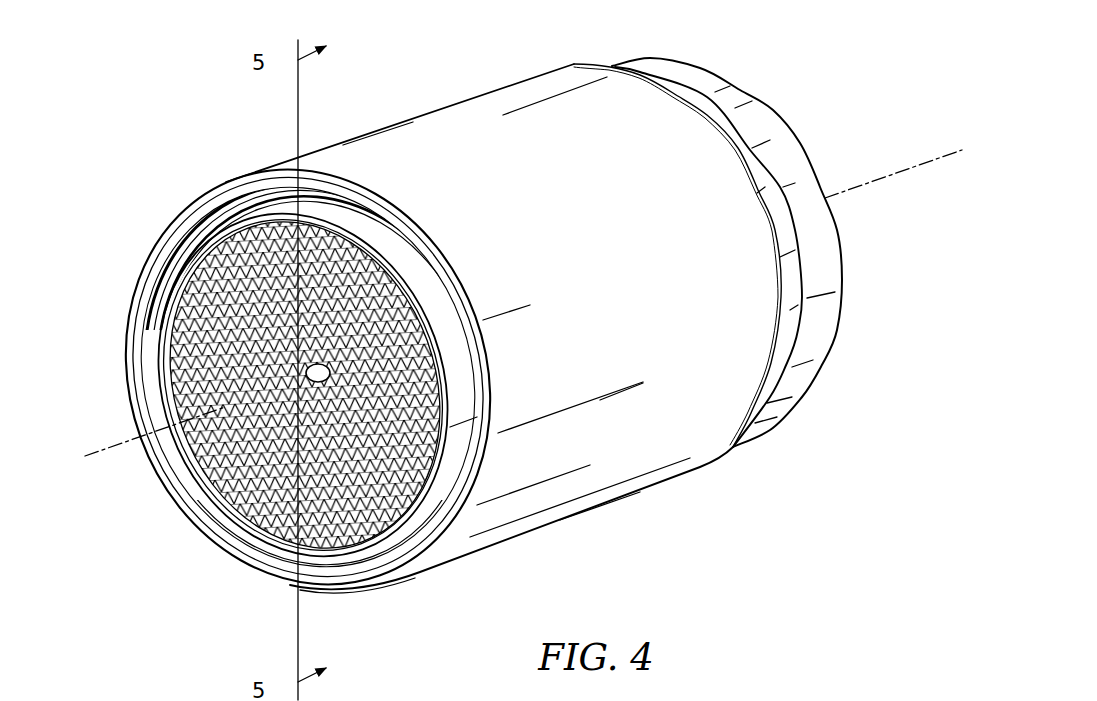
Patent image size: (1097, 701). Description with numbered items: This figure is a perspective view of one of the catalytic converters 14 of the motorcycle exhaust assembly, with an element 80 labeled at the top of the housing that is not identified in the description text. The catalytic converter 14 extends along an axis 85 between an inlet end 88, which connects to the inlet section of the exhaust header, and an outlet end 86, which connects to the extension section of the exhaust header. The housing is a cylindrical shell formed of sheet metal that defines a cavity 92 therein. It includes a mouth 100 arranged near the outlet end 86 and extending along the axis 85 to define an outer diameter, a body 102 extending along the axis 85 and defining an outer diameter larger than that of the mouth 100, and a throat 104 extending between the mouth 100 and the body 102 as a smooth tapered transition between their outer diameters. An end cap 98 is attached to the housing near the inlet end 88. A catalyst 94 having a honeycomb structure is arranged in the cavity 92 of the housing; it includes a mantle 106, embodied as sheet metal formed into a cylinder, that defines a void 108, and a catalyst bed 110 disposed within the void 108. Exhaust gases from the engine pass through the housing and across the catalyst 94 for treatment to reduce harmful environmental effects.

The catalytic converter 14 is at (580, 42).
The housing body 80 is at (400, 112).
The outlet end 86 is at (746, 223).
The mouth 100 is at (772, 131).
The throat 104 is at (801, 324).
The body 102 is at (693, 436).
The cavity 92 is at (226, 186).
The inlet end 88 is at (294, 376).
The catalyst 94 is at (192, 278).
The end cap 98 is at (121, 329).
The axis 85 is at (112, 448).
The mantle 106 is at (190, 452).
The void 108 is at (216, 490).
The catalyst bed 110 is at (347, 584).